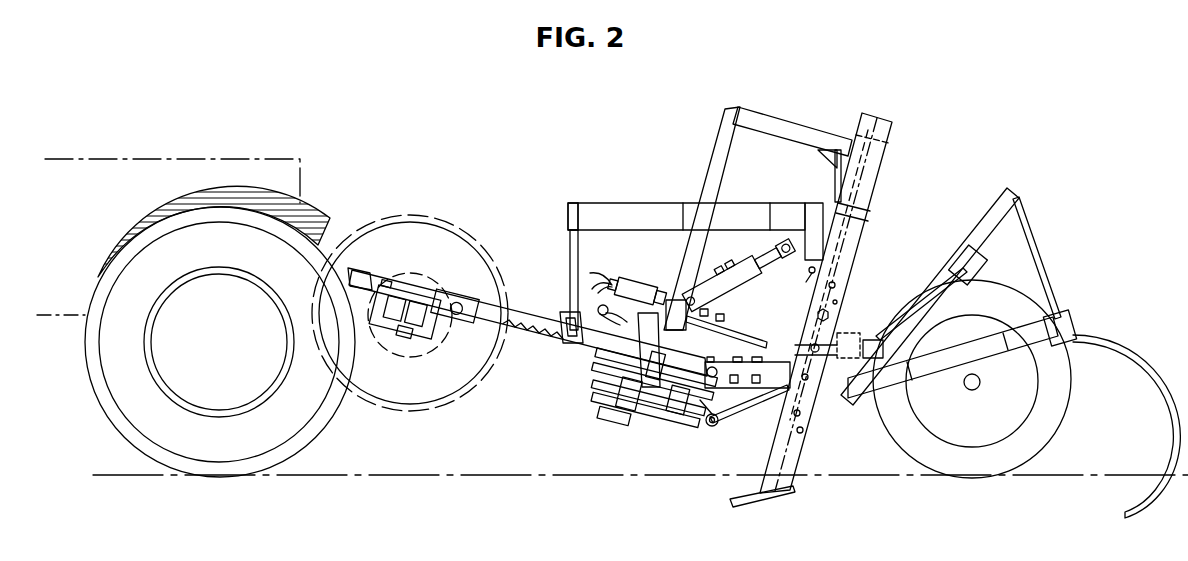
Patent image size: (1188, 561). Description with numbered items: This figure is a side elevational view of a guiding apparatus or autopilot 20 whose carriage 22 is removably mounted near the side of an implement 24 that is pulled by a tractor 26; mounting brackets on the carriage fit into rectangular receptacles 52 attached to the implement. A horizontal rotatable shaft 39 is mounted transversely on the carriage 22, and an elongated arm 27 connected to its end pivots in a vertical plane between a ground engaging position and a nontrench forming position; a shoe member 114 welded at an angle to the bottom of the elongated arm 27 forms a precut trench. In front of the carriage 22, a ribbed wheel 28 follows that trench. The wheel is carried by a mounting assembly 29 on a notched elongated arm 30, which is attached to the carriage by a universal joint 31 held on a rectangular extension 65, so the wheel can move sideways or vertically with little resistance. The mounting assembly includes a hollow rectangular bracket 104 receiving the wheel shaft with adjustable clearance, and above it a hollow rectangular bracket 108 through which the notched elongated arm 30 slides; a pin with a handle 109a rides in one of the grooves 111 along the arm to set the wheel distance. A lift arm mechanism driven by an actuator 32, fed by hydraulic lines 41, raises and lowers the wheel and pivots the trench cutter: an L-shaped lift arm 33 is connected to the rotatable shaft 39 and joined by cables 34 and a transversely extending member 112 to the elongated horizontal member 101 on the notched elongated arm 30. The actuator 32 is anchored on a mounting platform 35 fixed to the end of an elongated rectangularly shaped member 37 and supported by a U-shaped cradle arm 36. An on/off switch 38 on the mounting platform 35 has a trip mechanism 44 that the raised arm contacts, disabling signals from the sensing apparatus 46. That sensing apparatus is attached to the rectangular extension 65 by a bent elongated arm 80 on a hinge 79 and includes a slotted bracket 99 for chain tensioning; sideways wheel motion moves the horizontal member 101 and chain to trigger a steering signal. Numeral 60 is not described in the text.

The guiding apparatus 20 is at (620, 480).
The carriage 22 is at (855, 333).
The implement 24 is at (1072, 322).
The tractor 26 is at (188, 159).
The elongated arm 27 is at (811, 329).
The ribbed wheel 28 is at (418, 218).
The mounting assembly 29 is at (430, 348).
The notched elongated arm 30 is at (528, 323).
The universal joint 31 is at (716, 426).
The actuator 32 is at (739, 274).
The lift arm 33 is at (693, 213).
The cables 34 is at (570, 251).
The mounting platform 35 is at (672, 339).
The cradle arm 36 is at (795, 127).
The elongated rectangularly shaped member 37 is at (766, 343).
The on/off switch 38 is at (636, 286).
The rotatable shaft 39 is at (822, 404).
The hydraulic lines 41 is at (743, 250).
The trip mechanism 44 is at (609, 318).
The sensing apparatus 46 is at (652, 398).
The rectangular receptacles 52 is at (883, 332).
The pin 60 is at (809, 274).
The rectangular extension 65 is at (774, 364).
The hinge 79 is at (709, 425).
The elongated arm 80 is at (760, 400).
The slotted bracket 99 is at (624, 400).
The elongated horizontal member 101 is at (570, 344).
The hollow rectangular bracket 104 is at (400, 333).
The hollow rectangular bracket 108 is at (368, 278).
The handle 109a is at (457, 300).
The grooves 111 is at (522, 336).
The transversely extending member 112 is at (572, 203).
The shoe member 114 is at (750, 506).